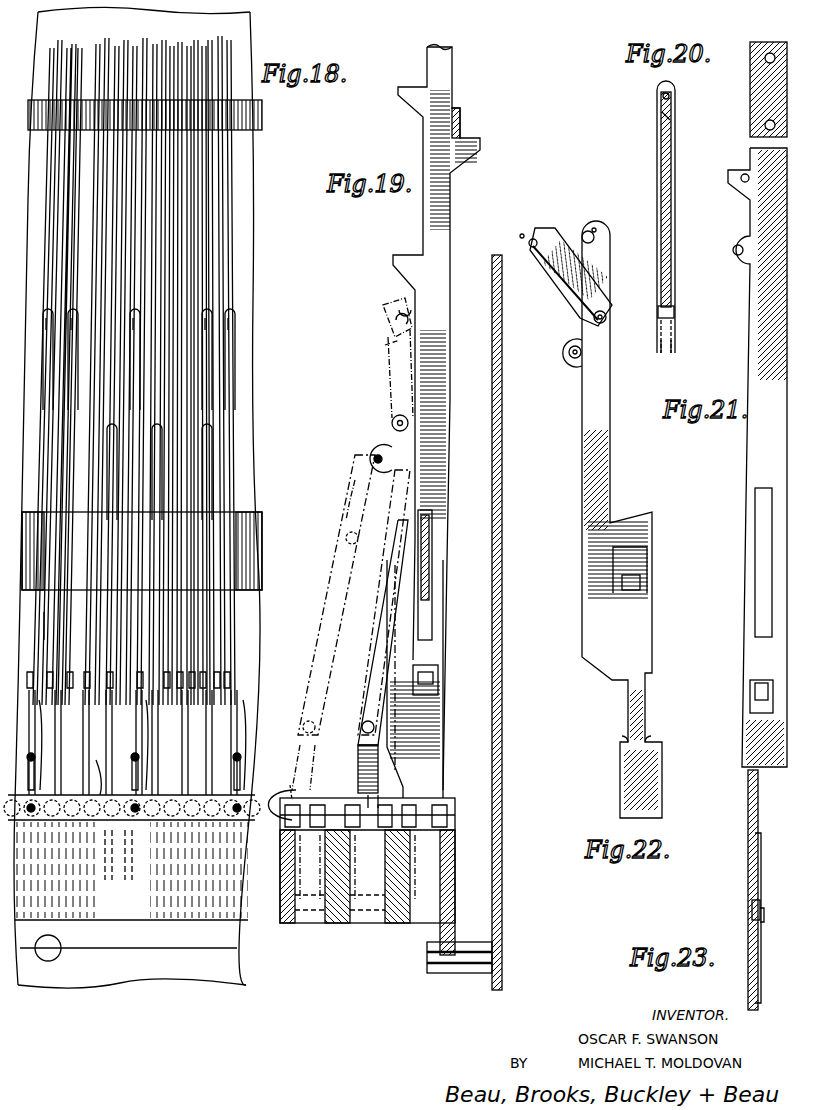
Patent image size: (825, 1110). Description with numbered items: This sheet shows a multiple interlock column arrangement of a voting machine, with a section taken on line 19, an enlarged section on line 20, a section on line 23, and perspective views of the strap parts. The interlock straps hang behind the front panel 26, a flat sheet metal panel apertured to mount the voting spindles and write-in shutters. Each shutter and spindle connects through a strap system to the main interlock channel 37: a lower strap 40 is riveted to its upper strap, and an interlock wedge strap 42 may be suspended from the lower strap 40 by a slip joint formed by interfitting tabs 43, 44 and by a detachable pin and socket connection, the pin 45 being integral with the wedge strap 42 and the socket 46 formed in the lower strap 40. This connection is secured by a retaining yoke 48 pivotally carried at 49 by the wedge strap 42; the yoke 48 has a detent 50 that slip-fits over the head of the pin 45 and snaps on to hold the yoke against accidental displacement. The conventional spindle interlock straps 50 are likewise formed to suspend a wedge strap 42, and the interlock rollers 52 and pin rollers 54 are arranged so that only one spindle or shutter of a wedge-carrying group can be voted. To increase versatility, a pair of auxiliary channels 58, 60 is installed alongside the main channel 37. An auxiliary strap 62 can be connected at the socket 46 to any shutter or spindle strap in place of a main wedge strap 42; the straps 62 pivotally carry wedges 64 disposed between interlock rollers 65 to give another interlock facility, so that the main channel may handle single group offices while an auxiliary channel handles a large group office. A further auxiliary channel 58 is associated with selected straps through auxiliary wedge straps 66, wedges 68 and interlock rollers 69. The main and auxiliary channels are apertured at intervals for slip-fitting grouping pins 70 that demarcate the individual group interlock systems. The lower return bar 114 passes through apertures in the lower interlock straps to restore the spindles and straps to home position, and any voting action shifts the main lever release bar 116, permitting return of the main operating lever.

In FIG. 18, the section line 19— 19 is at (214, 22).
In FIG. 19, the section line 20— 20 is at (414, 288).
In FIG. 19, the section line 23— 23 is at (428, 640).
In FIG. 18, the front panel 26 is at (248, 470).
In FIG. 19, the front panel 26 is at (502, 778).
In FIG. 19, the main interlock channel 37 is at (420, 918).
In FIG. 18, the lower strap 40 is at (30, 700).
In FIG. 19, the lower strap 40 is at (440, 312).
In FIG. 21, the lower strap 40 is at (748, 448).
In FIG. 23, the lower strap 40 is at (742, 850).
In FIG. 18, the interlock wedge strap 42 is at (230, 742).
In FIG. 19, the interlock wedge strap 42 is at (432, 792).
In FIG. 20, the interlock wedge strap 42 is at (674, 345).
In FIG. 22, the interlock wedge strap 42 is at (610, 440).
In FIG. 23, the interlock wedge strap 42 is at (760, 978).
In FIG. 18, the interfitting tab 43 is at (225, 676).
In FIG. 19, the interfitting tab 43 is at (436, 682).
In FIG. 21, the interfitting tab 43 is at (752, 696).
In FIG. 23, the interfitting tab 43 is at (762, 926).
In FIG. 22, the interfitting tab 44 is at (648, 578).
In FIG. 23, the interfitting tab 44 is at (750, 926).
In FIG. 18, the pin 45 is at (236, 322).
In FIG. 19, the pin 45 is at (384, 344).
In FIG. 20, the pin 45 is at (663, 118).
In FIG. 22, the pin 45 is at (592, 228).
In FIG. 19, the socket 46 is at (366, 456).
In FIG. 21, the socket 46 is at (735, 250).
In FIG. 22, the socket 46 is at (566, 360).
In FIG. 18, the retaining yoke 48 is at (216, 352).
In FIG. 19, the retaining yoke 48 is at (382, 310).
In FIG. 20, the retaining yoke 48 is at (676, 218).
In FIG. 22, the retaining yoke 48 is at (566, 235).
In FIG. 19, the yoke pivot 49 is at (392, 420).
In FIG. 20, the yoke pivot 49 is at (672, 312).
In FIG. 22, the yoke pivot 49 is at (607, 318).
In FIG. 18, the detent / interlock strap 50 is at (218, 672).
In FIG. 20, the detent / interlock strap 50 is at (662, 98).
In FIG. 22, the detent / interlock strap 50 is at (534, 250).
In FIG. 18, the interlock roller 52 is at (60, 828).
In FIG. 19, the pin roller 54 is at (455, 810).
In FIG. 19, the auxiliary interlock channel 58 is at (305, 918).
In FIG. 19, the auxiliary interlock channel 60 is at (370, 918).
In FIG. 19, the auxiliary strap 62 is at (372, 674).
In FIG. 18, the wedge 64 is at (104, 778).
In FIG. 19, the wedge 64 is at (360, 752).
In FIG. 19, the interlock roller 65 is at (376, 798).
In FIG. 19, the auxiliary wedge strap 66 is at (333, 602).
In FIG. 18, the wedge 68 is at (150, 872).
In FIG. 19, the wedge 68 is at (298, 754).
In FIG. 19, the interlock roller 69 is at (318, 790).
In FIG. 18, the grouping pin 70 is at (28, 775).
In FIG. 18, the lower return bar 114 is at (256, 540).
In FIG. 19, the lower return bar 114 is at (430, 542).
In FIG. 18, the main lever release bar 116 is at (262, 118).
In FIG. 19, the main lever release bar 116 is at (461, 122).